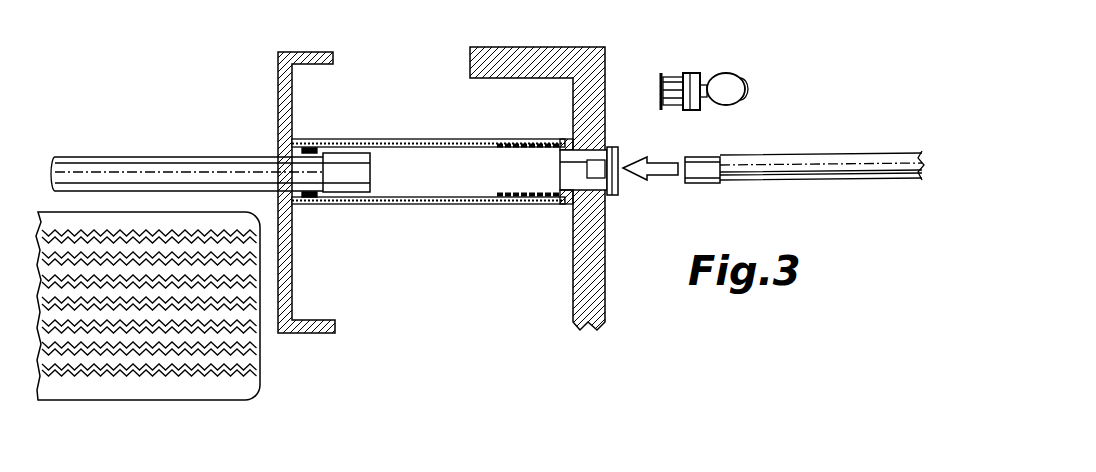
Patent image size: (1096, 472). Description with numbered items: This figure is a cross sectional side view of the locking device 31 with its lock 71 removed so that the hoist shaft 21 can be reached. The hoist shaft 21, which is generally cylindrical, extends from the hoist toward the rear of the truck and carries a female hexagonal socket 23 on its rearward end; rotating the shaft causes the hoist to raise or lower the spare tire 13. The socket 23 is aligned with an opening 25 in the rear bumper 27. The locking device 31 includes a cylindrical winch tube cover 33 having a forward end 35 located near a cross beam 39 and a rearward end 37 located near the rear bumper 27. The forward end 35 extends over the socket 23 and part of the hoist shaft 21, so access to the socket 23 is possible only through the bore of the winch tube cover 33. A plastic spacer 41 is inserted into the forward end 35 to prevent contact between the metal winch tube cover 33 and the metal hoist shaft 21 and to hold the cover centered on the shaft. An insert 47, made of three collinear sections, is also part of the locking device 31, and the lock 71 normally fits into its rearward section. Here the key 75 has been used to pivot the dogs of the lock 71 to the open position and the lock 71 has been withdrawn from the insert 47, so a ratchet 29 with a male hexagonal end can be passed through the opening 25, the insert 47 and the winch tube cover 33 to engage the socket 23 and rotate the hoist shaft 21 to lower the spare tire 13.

The spare tire 13 is at (208, 394).
The hoist shaft 21 is at (170, 156).
The female hexagonal socket 23 is at (350, 141).
The opening 25 is at (622, 184).
The rear bumper 27 is at (606, 66).
The ratchet 29 is at (822, 155).
The locking device 31 is at (515, 211).
The winch tube cover 33 is at (413, 204).
The forward end 35 is at (311, 198).
The rearward end 37 is at (571, 138).
The cross beam 39 is at (277, 95).
The plastic spacer 41 is at (303, 140).
The insert 47 is at (566, 204).
The lock 71 is at (674, 110).
The key 75 is at (733, 74).